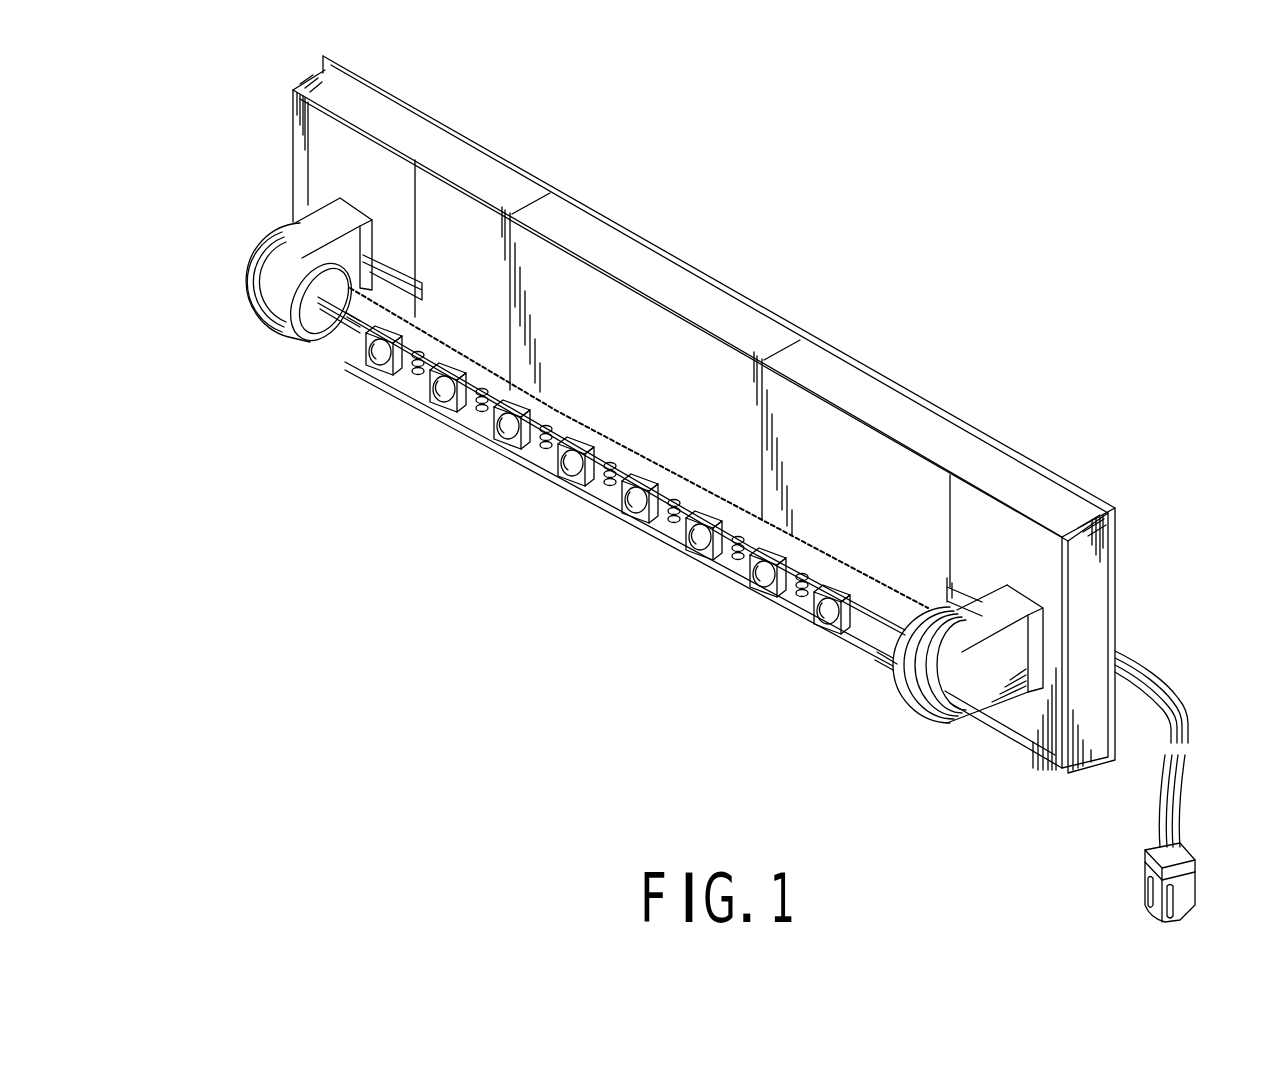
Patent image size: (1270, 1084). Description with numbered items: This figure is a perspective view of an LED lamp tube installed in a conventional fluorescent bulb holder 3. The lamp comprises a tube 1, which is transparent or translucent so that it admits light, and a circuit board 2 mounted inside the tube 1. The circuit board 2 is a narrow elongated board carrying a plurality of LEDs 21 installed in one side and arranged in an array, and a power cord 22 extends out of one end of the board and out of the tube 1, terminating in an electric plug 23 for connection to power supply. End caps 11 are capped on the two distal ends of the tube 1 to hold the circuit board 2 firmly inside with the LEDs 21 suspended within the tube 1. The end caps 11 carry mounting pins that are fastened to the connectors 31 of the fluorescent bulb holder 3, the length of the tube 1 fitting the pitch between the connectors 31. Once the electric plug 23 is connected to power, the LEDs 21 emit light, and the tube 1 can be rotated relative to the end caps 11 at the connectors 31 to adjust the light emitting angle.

The tube 1 is at (820, 634).
The end cap 11 is at (896, 685).
The circuit board 2 is at (732, 550).
The LEDs 21 is at (696, 542).
The power cord 22 is at (1162, 807).
The electric plug 23 is at (1145, 857).
The fluorescent bulb holder 3 is at (293, 141).
The connectors 31 is at (300, 262).